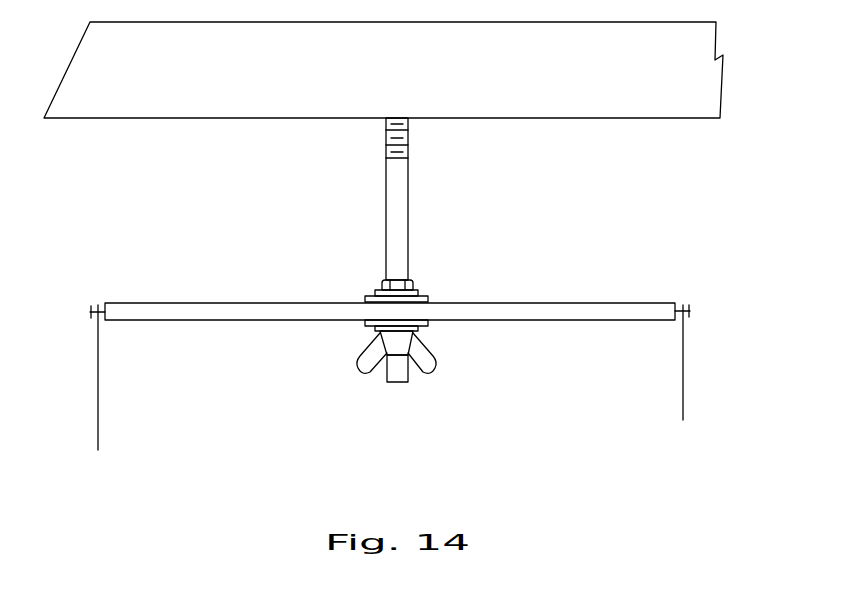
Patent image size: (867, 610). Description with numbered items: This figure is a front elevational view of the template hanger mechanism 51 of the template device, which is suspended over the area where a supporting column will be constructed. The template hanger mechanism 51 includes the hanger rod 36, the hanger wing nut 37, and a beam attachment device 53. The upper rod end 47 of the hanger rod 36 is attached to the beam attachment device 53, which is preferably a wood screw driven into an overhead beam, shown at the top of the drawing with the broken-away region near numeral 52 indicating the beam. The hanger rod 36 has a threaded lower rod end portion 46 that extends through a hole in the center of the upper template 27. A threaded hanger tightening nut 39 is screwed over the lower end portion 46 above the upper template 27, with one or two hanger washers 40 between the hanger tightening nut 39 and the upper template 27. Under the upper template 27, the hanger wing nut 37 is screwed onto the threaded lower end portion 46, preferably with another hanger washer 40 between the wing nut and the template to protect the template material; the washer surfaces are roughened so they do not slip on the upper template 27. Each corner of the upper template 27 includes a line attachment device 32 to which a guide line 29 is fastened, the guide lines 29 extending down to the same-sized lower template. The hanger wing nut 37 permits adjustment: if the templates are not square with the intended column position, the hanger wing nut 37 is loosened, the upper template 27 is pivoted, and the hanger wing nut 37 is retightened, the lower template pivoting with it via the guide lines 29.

The support plate 52 is at (215, 72).
The template hanger mechanism 51 is at (700, 152).
The beam attachment device 53 is at (386, 118).
The upper rod end 47 is at (408, 130).
The hanger rod 36 is at (408, 182).
The lower rod end portion 46 is at (402, 277).
The hanger tightening nut 39 is at (380, 283).
The hanger washer 40 is at (425, 296).
The upper template 27 is at (622, 310).
The hanger wing nut 37 is at (398, 347).
The line attachment device 32 is at (97, 305).
The guide line 29 is at (98, 403).